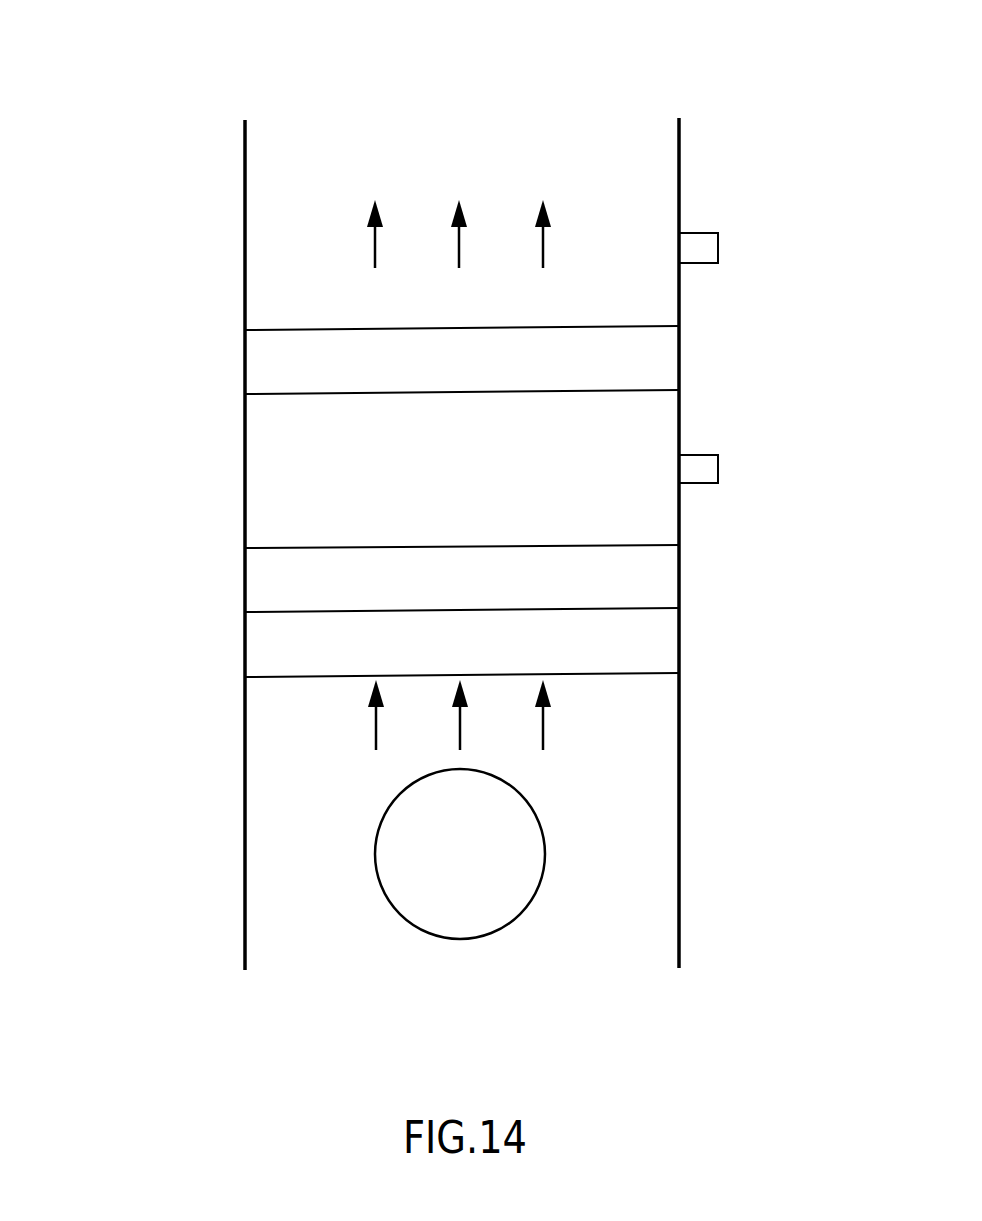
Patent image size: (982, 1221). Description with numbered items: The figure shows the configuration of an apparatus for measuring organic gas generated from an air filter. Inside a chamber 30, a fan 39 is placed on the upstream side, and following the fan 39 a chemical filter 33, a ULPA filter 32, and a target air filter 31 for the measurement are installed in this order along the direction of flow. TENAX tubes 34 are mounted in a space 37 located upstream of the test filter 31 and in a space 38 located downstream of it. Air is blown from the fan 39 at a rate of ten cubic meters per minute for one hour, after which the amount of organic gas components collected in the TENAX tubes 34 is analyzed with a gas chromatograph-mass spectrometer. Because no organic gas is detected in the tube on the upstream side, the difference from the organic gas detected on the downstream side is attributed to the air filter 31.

The chamber 30 is at (681, 845).
The target air filter 31 is at (262, 352).
The ULPA filter 32 is at (262, 568).
The chemical filter 33 is at (262, 645).
The TENAX tubes 34 is at (700, 462).
The space 37 is at (653, 512).
The space 38 is at (635, 122).
The fan 39 is at (410, 852).